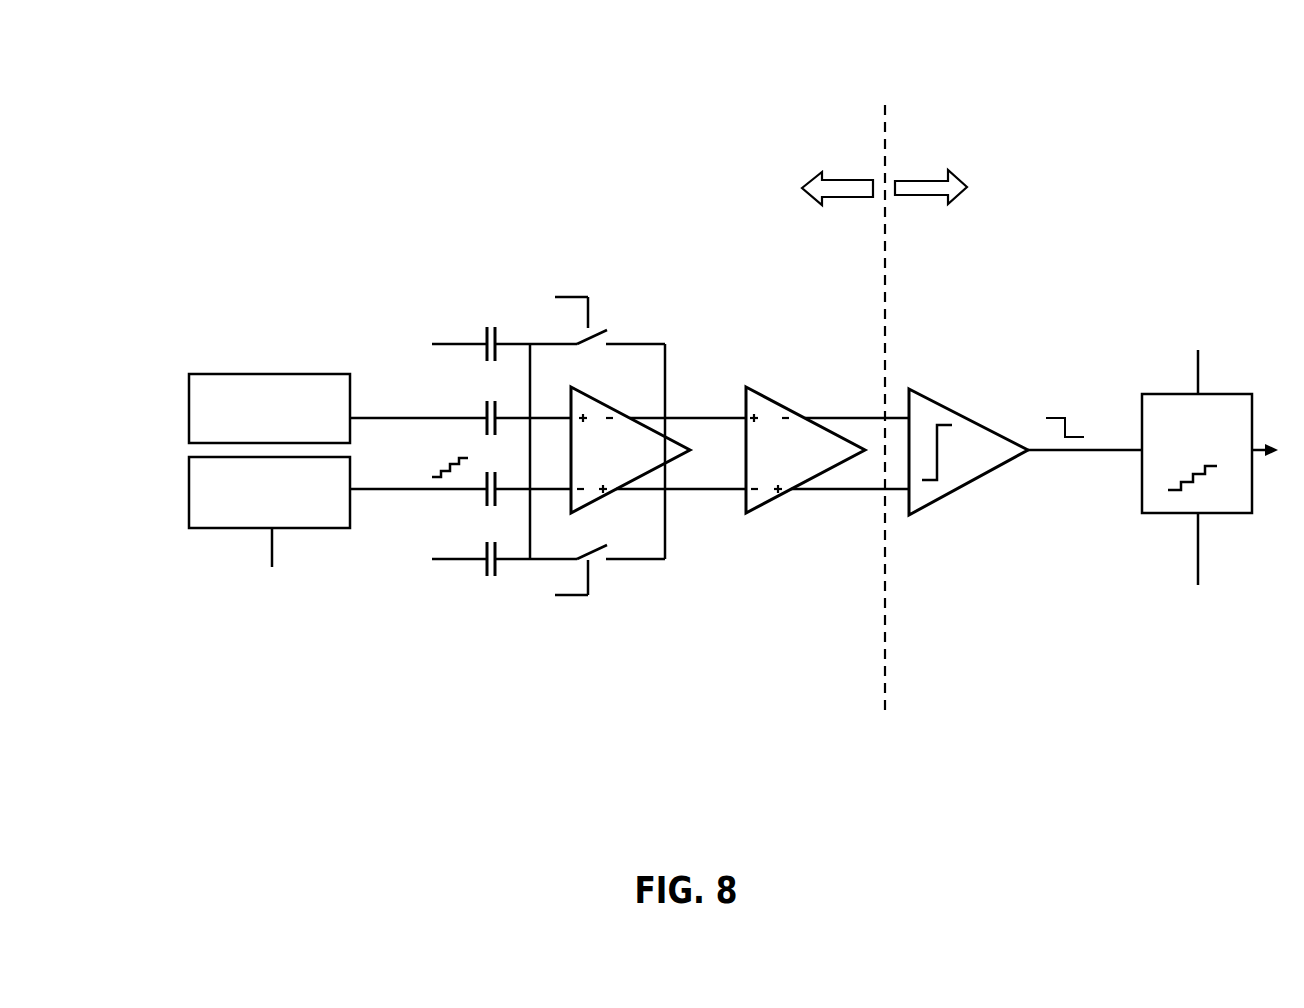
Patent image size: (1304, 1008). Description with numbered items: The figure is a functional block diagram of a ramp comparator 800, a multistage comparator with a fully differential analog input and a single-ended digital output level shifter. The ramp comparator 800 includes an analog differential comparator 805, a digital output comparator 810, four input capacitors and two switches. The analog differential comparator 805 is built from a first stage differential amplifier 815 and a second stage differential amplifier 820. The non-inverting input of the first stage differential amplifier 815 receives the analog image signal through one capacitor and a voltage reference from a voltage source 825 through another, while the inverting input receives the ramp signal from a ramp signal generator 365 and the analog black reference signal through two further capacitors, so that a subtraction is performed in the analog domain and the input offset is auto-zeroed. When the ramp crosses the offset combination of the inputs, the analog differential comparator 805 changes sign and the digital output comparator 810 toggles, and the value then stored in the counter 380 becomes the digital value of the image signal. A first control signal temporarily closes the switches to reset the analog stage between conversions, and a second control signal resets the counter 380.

The ramp comparator 800 is at (1126, 85).
The analog differential comparator 805 is at (415, 250).
The digital output comparator 810 is at (1025, 415).
The first stage differential amplifier 815 is at (587, 463).
The second stage differential amplifier 820 is at (764, 463).
The voltage source 825 is at (299, 431).
The ramp signal generator 365 is at (317, 513).
The counter 380 is at (1212, 451).